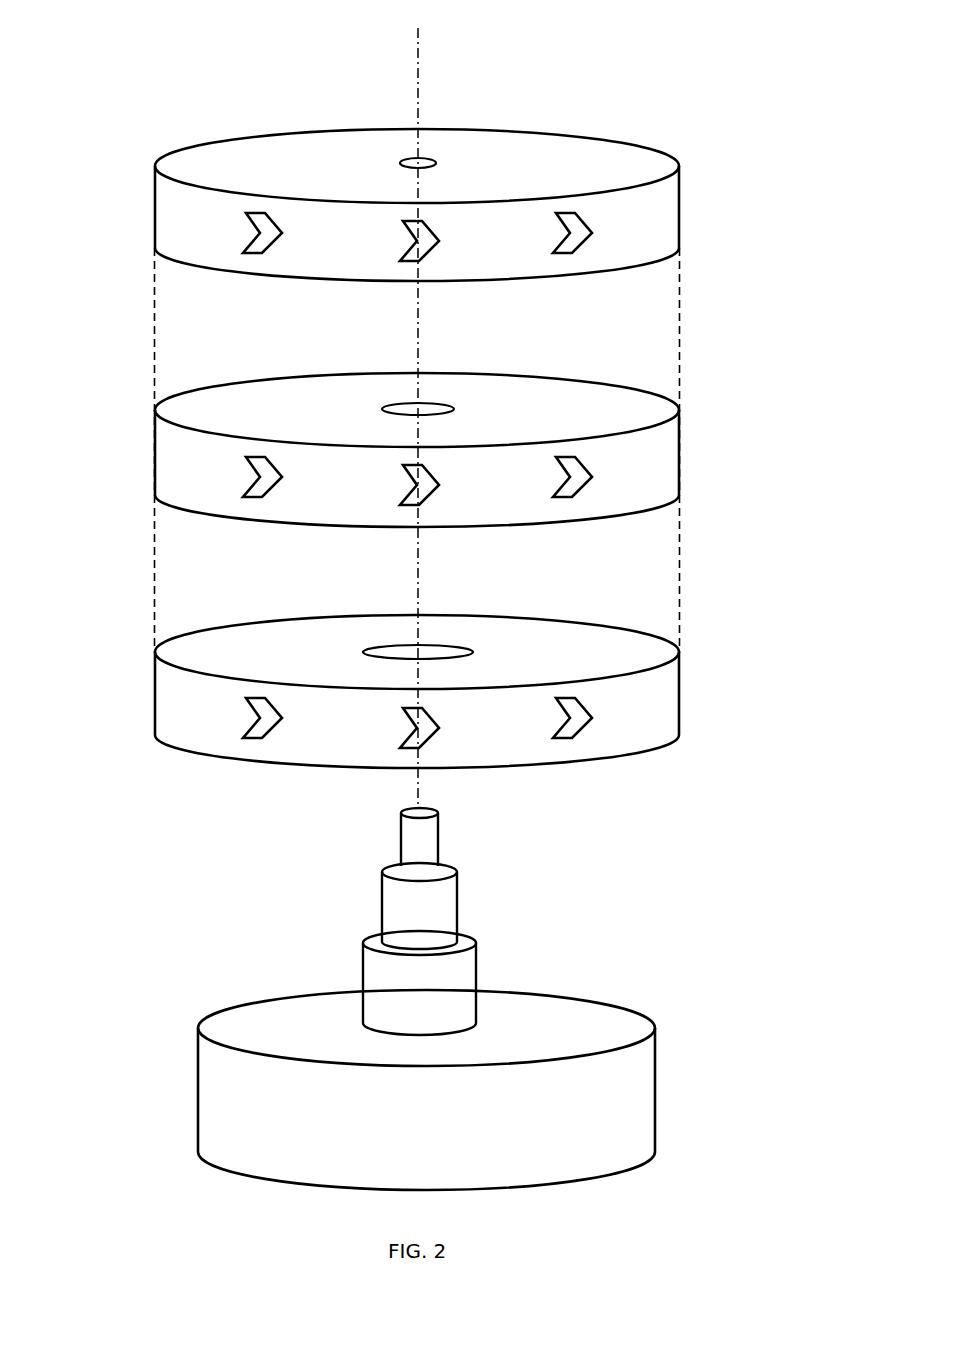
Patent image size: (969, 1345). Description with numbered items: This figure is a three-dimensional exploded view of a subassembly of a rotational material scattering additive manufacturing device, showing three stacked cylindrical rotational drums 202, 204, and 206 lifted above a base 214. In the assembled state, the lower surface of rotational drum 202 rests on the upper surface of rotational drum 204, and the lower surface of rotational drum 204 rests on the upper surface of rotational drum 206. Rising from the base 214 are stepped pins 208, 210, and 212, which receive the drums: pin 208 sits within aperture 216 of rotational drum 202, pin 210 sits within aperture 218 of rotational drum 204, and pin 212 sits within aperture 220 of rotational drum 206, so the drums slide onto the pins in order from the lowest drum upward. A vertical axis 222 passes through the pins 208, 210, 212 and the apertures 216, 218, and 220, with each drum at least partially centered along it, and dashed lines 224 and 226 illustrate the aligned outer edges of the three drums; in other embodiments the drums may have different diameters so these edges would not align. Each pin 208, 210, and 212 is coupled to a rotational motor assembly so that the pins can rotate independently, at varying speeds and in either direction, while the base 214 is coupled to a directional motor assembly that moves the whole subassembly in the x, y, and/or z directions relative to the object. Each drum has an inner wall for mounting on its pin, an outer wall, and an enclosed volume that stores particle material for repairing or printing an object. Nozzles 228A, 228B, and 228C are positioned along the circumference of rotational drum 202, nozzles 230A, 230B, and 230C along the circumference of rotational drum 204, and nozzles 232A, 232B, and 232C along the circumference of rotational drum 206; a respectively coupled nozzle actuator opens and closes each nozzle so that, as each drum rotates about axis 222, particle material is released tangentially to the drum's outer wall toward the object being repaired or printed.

The rotational drum 202 is at (663, 212).
The rotational drum 204 is at (663, 455).
The rotational drum 206 is at (663, 700).
The pin 208 is at (428, 853).
The pin 210 is at (438, 920).
The pin 212 is at (458, 1007).
The base 214 is at (439, 1142).
The aperture 216 is at (436, 163).
The aperture 218 is at (454, 409).
The aperture 220 is at (473, 652).
The axis 222 is at (420, 105).
The line 224 is at (154, 347).
The line 226 is at (680, 322).
The nozzle 228A is at (252, 253).
The nozzle 228B is at (409, 261).
The nozzle 228C is at (562, 253).
The nozzle 230A is at (252, 497).
The nozzle 230B is at (409, 505).
The nozzle 230C is at (562, 497).
The nozzle 232A is at (252, 738).
The nozzle 232B is at (409, 748).
The nozzle 232C is at (562, 738).